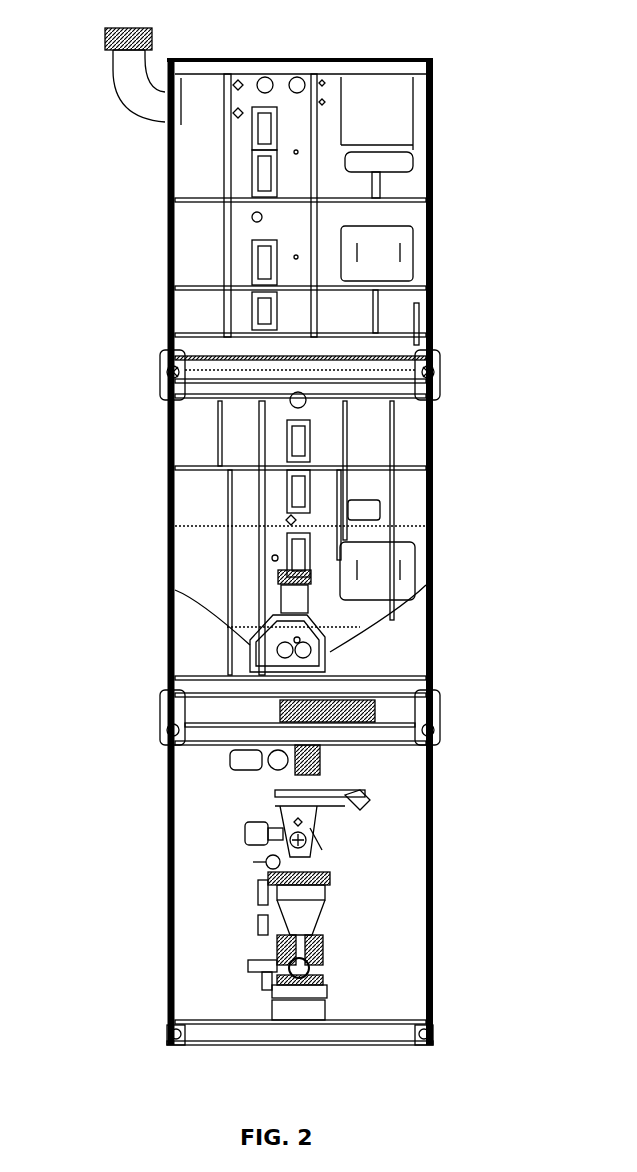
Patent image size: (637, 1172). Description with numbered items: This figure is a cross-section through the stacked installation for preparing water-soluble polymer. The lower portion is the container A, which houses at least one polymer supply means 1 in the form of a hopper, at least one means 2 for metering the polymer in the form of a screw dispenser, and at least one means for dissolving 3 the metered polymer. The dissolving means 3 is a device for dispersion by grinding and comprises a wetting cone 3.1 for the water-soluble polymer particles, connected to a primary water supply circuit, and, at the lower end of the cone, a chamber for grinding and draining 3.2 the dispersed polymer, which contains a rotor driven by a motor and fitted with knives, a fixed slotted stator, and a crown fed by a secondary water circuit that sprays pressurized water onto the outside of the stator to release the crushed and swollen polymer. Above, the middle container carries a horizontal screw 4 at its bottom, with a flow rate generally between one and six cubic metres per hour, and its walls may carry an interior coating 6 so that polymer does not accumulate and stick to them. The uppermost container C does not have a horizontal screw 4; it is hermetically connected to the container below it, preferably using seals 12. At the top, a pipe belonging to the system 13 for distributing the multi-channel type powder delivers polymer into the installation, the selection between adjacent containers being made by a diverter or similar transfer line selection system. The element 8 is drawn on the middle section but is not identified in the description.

The system for distributing the multi-channel type powder 13 is at (110, 53).
The container C is at (167, 233).
The seals 12 is at (435, 377).
The middle cabinet section 8 is at (168, 460).
The interior coating 6 is at (250, 645).
The horizontal screw 4 is at (335, 650).
The polymer supply means 1 is at (335, 748).
The polymer metering means 2 is at (368, 800).
The means for dissolving the metered polymer 3 is at (302, 946).
The wetting cone 3.1 is at (280, 902).
The chamber for grinding and draining 3.2 is at (290, 962).
The container A is at (426, 930).